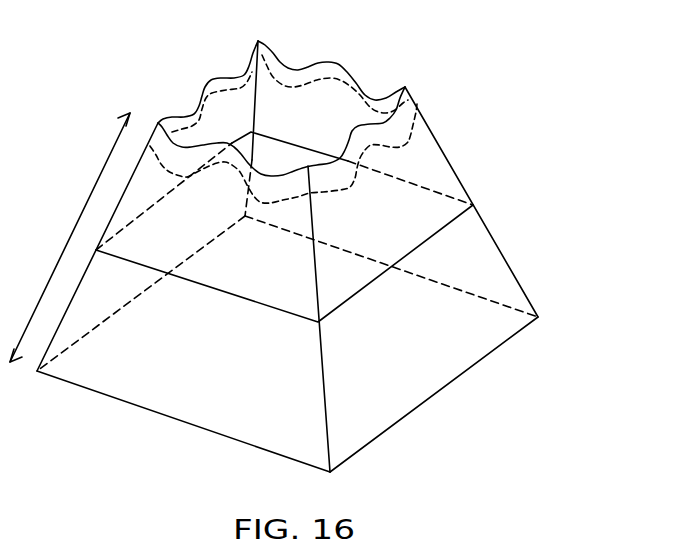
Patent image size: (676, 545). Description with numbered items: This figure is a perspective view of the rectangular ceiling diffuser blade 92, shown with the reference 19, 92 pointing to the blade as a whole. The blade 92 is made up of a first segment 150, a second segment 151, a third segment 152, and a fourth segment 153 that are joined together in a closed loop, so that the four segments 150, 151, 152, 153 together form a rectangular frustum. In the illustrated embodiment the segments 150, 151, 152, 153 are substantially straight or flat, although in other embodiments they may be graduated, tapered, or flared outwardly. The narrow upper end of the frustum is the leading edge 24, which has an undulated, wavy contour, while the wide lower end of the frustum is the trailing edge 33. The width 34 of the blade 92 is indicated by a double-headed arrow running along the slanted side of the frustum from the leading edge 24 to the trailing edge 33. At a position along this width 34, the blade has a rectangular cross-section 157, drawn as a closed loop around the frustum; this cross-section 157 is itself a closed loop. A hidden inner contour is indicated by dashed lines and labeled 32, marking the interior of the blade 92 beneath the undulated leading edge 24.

The thermal management structure 19 is at (316, 256).
The rectangular ceiling diffuser blade 92 is at (465, 146).
The leading edge 24 is at (277, 54).
The inner surface 32 is at (433, 137).
The trailing edge 33 is at (438, 397).
The width 34 is at (70, 238).
The first segment 150 is at (177, 397).
The second segment 151 is at (218, 103).
The third segment 152 is at (338, 93).
The fourth segment 153 is at (478, 228).
The rectangular cross-section 157 is at (423, 245).